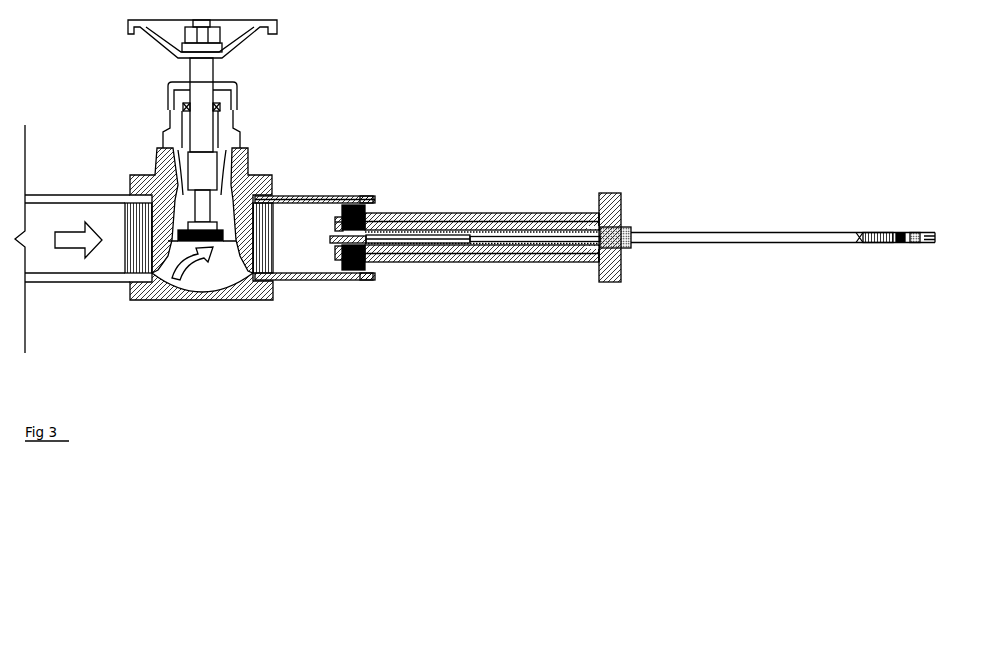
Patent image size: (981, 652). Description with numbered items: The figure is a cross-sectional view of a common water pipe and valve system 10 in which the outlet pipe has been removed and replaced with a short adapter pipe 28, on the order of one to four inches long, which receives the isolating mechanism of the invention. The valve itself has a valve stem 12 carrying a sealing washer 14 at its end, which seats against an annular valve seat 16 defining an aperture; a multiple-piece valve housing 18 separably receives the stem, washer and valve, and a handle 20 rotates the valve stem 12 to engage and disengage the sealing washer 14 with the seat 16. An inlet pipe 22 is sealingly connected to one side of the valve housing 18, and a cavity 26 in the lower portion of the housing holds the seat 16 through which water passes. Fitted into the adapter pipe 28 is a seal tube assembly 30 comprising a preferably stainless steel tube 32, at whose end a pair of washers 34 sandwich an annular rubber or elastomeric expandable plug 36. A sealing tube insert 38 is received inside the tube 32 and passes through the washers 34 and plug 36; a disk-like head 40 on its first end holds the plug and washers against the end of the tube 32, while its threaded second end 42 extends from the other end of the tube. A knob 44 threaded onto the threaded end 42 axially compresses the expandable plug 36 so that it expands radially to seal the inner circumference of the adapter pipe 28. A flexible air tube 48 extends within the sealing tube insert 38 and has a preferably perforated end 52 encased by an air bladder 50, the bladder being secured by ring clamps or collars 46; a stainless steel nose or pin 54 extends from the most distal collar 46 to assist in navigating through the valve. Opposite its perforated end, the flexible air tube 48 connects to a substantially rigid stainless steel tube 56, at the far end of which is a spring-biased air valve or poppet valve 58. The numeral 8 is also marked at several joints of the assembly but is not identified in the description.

The weld joint 8 is at (391, 214).
The water pipe and valve system 10 is at (342, 93).
The valve stem 12 is at (214, 107).
The sealing washer 14 is at (268, 198).
The valve seat 16 is at (178, 247).
The valve housing 18 is at (241, 127).
The handle 20 is at (272, 30).
The inlet pipe 22 is at (45, 198).
The cavity 26 is at (214, 286).
The adapter pipe 28 is at (305, 198).
The seal tube assembly 30 is at (476, 206).
The tube 32 is at (504, 211).
The washers 34 is at (347, 200).
The expandable plug 36 is at (361, 206).
The sealing tube insert 38 is at (466, 262).
The head 40 is at (334, 243).
The threaded second end 42 is at (629, 228).
The knob 44 is at (613, 189).
The collars 46 is at (404, 251).
The flexible air tube 48 is at (468, 233).
The air bladder 50 is at (392, 249).
The end 52 is at (394, 237).
The nose or pin 54 is at (340, 223).
The stainless steel tube 56 is at (731, 247).
The poppet valve 58 is at (916, 229).